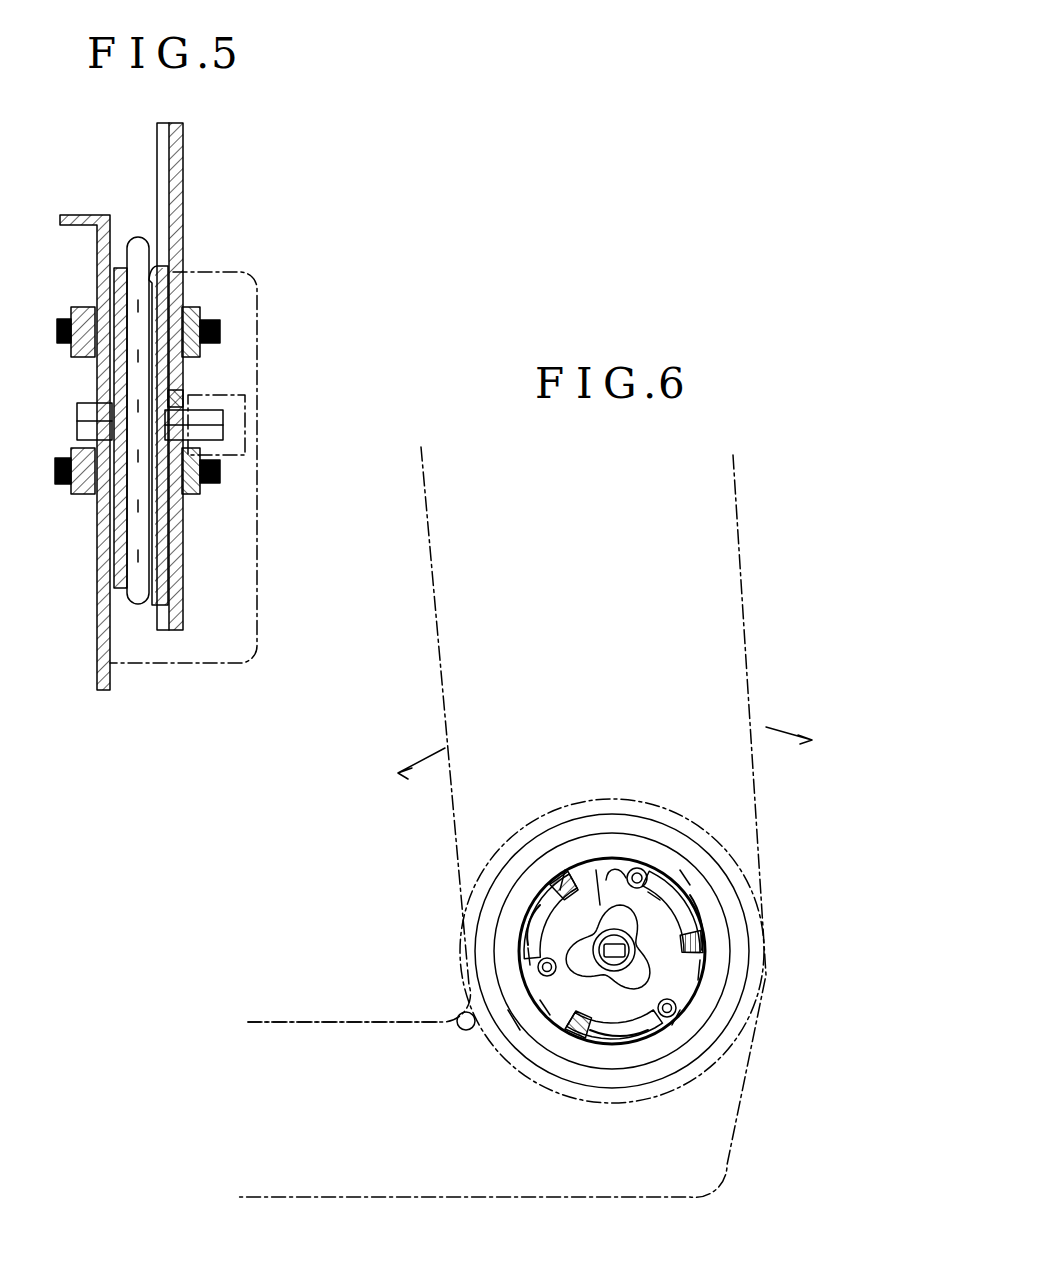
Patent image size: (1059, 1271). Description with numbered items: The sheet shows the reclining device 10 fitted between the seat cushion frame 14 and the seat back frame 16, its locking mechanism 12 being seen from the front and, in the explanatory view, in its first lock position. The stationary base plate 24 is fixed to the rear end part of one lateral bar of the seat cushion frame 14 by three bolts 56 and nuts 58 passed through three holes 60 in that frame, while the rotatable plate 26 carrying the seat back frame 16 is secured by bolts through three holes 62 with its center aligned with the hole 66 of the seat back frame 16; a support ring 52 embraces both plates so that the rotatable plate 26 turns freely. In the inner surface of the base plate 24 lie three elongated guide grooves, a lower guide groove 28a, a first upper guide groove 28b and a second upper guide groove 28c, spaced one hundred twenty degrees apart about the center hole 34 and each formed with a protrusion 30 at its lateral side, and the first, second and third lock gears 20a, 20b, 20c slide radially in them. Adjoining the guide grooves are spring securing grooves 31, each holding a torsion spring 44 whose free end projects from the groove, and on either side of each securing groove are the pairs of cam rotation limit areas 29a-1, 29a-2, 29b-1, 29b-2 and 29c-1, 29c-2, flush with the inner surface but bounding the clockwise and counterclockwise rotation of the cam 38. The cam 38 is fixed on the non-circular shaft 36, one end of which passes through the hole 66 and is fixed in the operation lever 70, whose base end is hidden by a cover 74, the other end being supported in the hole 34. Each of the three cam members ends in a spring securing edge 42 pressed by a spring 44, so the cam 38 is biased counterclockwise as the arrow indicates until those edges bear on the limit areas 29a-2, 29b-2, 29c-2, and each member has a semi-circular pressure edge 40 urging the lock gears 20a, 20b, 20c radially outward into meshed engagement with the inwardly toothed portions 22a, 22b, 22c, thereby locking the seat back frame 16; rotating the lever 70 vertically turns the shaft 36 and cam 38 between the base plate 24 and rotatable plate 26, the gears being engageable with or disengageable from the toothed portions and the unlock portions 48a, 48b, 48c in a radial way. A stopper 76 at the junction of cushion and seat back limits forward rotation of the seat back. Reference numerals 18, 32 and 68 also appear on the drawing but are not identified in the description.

In FIG. 5, the reclining device 10 is at (280, 158).
In FIG. 6, the reclining device 10 is at (348, 826).
In FIG. 5, the locking mechanism 12 is at (136, 235).
In FIG. 6, the locking mechanism 12 is at (741, 1033).
In FIG. 5, the seat cushion frame 14 is at (97, 578).
In FIG. 6, the seat cushion frame 14 is at (292, 1018).
In FIG. 5, the seat back frame 16 is at (183, 157).
In FIG. 6, the seat back frame 16 is at (444, 643).
In FIG. 6, the hub shell 18 is at (505, 878).
In FIG. 6, the first lock gear 20a is at (635, 1050).
In FIG. 6, the second lock gear 20b is at (530, 877).
In FIG. 6, the third lock gear 20c is at (690, 890).
In FIG. 6, the first inwardly toothed portion 22a is at (515, 940).
In FIG. 6, the second inwardly toothed portion 22b is at (660, 873).
In FIG. 6, the third inwardly toothed portion 22c is at (672, 1030).
In FIG. 6, the stationary base plate 24 is at (595, 860).
In FIG. 6, the rotatable plate 26 is at (647, 873).
In FIG. 6, the lower guide groove 28a is at (645, 1060).
In FIG. 6, the first upper guide groove 28b is at (500, 930).
In FIG. 6, the second upper guide groove 28c is at (715, 930).
In FIG. 6, the first cam rotation limit area 29a-1 is at (520, 965).
In FIG. 6, the first cam rotation limit area 29a-2 is at (553, 1060).
In FIG. 6, the second cam rotation limit area 29b-1 is at (700, 880).
In FIG. 6, the second cam rotation limit area 29b-2 is at (580, 860).
In FIG. 6, the third cam rotation limit area 29c-1 is at (655, 1050).
In FIG. 6, the third cam rotation limit area 29c-2 is at (710, 975).
In FIG. 6, the protrusion 30 is at (586, 1045).
In FIG. 6, the spring securing groove 31 is at (520, 1025).
In FIG. 6, the axle hole 32 is at (590, 1050).
In FIG. 5, the hole 34 is at (88, 403).
In FIG. 5, the shaft 36 is at (77, 420).
In FIG. 6, the shaft 36 is at (733, 997).
In FIG. 6, the cam 38 is at (725, 882).
In FIG. 6, the pressure edge 40 is at (735, 1075).
In FIG. 6, the spring securing edge 42 is at (610, 855).
In FIG. 6, the torsion spring 44 is at (645, 860).
In FIG. 6, the unlock portion 48a is at (570, 1040).
In FIG. 6, the unlock portion 48b is at (548, 888).
In FIG. 6, the unlock portion 48c is at (705, 950).
In FIG. 5, the support ring 52 is at (130, 606).
In FIG. 5, the bolt 56 is at (57, 330).
In FIG. 5, the nut 58 is at (220, 328).
In FIG. 5, the hole 60 is at (110, 290).
In FIG. 5, the hole 62 is at (172, 280).
In FIG. 5, the hole 66 is at (180, 400).
In FIG. 5, the washer 68 is at (80, 307).
In FIG. 5, the operation lever 70 is at (245, 400).
In FIG. 5, the cover 74 is at (260, 585).
In FIG. 6, the stopper 76 is at (458, 1030).